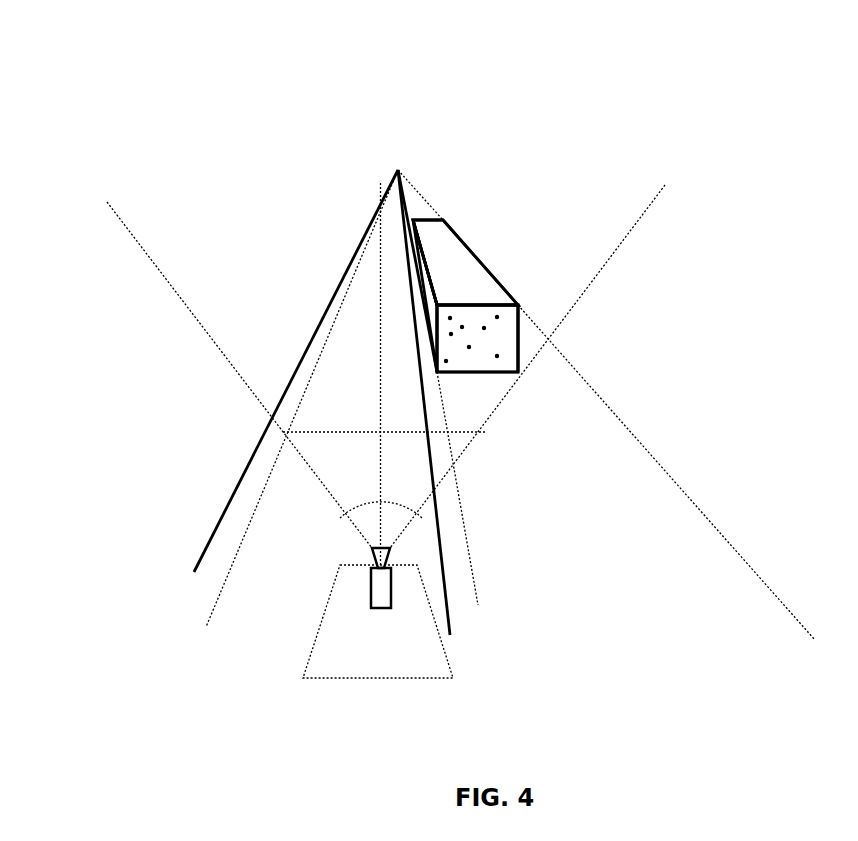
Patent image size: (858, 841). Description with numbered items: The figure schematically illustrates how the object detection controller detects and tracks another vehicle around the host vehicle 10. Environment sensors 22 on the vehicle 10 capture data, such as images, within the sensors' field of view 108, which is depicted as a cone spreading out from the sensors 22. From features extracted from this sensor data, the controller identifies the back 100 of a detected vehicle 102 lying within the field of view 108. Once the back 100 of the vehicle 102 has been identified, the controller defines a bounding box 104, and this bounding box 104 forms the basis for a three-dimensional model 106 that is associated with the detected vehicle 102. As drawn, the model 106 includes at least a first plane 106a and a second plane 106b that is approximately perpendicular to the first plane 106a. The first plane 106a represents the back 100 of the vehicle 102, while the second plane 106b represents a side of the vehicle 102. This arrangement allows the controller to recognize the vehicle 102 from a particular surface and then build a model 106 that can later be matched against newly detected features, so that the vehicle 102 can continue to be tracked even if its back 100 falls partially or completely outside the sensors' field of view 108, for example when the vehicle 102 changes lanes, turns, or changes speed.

The vehicle 10 is at (445, 650).
The sensors 22 is at (371, 596).
The back of vehicle 100 is at (475, 367).
The vehicle 102 is at (477, 210).
The bounding box 104 is at (518, 320).
The three-dimensional model 106 is at (427, 195).
The first plane 106a is at (493, 340).
The second plane 106b is at (427, 293).
The field of view 108 is at (352, 492).